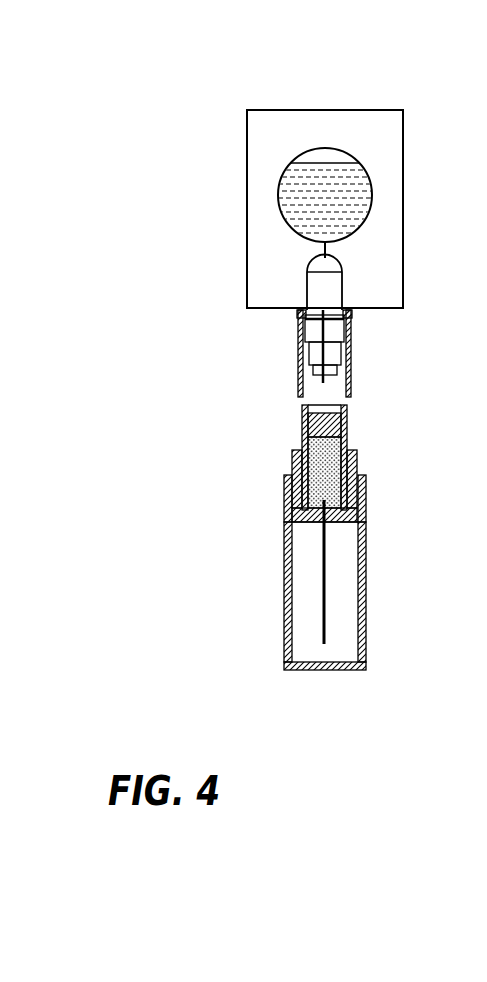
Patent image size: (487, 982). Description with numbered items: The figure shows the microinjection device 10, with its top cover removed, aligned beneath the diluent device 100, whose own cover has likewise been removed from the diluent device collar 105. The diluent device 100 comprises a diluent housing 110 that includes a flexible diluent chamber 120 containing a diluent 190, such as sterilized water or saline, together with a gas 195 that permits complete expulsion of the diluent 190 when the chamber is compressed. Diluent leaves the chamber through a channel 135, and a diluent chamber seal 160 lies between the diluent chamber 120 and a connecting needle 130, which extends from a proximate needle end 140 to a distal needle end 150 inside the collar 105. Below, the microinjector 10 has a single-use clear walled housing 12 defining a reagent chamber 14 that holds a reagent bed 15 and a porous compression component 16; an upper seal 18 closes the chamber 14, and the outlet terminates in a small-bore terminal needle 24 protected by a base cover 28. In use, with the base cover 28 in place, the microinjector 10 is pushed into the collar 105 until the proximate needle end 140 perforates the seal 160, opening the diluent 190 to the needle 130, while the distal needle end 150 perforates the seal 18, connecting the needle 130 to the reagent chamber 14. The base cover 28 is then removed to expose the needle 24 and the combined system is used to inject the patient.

The microinjection device 10 is at (243, 639).
The housing 12 is at (302, 458).
The reagent chamber 14 is at (357, 452).
The reagent bed 15 is at (287, 498).
The porous compression component 16 is at (347, 424).
The upper seal 18 is at (302, 408).
The terminal needle 24 is at (326, 568).
The base cover 28 is at (366, 600).
The diluent device 100 is at (191, 226).
The diluent device collar 105 is at (298, 334).
The diluent housing 110 is at (352, 250).
The diluent chamber 120 is at (280, 185).
The connecting needle 130 is at (347, 355).
The channel 135 is at (333, 283).
The proximate needle end 140 is at (351, 329).
The distal needle end 150 is at (325, 383).
The diluent chamber seal 160 is at (349, 312).
The diluent 190 is at (327, 213).
The gas 195 is at (328, 157).